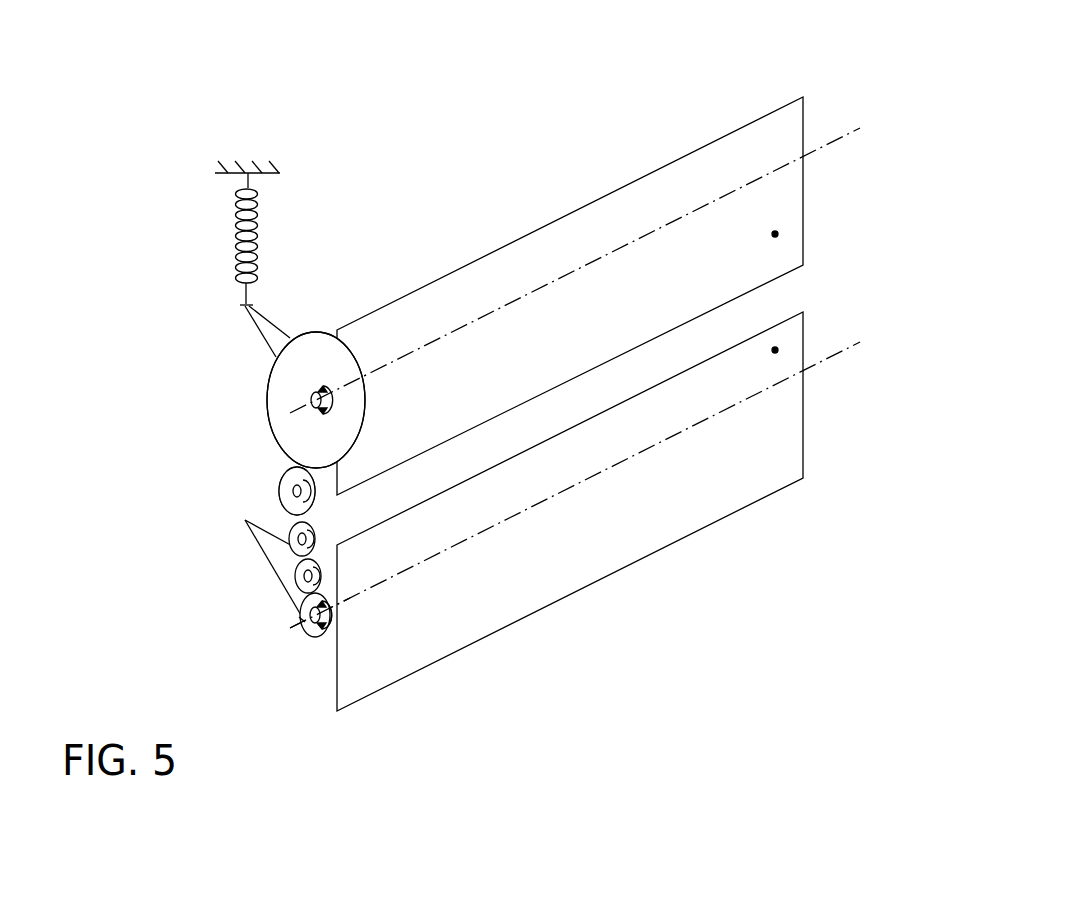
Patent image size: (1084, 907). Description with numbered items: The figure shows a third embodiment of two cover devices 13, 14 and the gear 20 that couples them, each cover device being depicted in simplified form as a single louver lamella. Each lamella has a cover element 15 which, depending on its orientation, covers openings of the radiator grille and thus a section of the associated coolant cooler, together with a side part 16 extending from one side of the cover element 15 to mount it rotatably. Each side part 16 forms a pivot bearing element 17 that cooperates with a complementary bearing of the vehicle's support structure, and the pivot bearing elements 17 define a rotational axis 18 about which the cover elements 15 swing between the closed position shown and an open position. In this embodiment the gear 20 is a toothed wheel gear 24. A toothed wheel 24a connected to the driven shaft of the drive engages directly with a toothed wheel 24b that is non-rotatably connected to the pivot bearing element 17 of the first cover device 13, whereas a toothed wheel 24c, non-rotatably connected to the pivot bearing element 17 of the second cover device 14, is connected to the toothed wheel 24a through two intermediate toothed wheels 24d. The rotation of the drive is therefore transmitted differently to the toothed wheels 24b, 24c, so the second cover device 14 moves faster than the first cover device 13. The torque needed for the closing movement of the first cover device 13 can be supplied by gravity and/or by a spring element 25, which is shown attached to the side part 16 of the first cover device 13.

The first cover device 13 is at (822, 99).
The second cover device 14 is at (823, 473).
The cover element 15 is at (775, 234).
The side part 16 is at (257, 327).
The pivot bearing element 17 is at (292, 400).
The rotational axis 18 is at (838, 146).
The gear 20 is at (232, 438).
The toothed wheel gear 24 is at (297, 491).
The toothed wheel 24a is at (278, 492).
The toothed wheel 24b is at (316, 349).
The toothed wheel 24c is at (300, 617).
The intermediate toothed wheels 24d is at (286, 550).
The spring element 25 is at (236, 235).